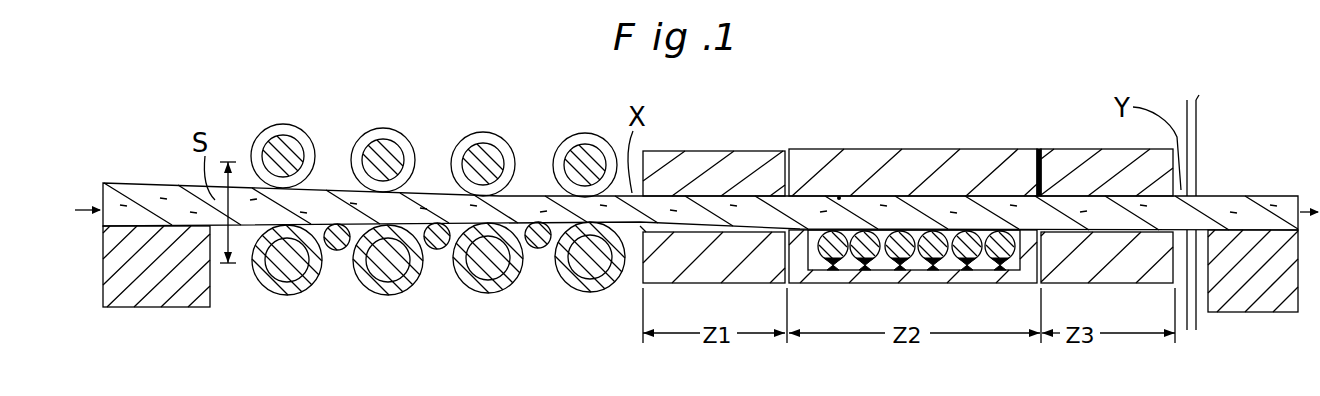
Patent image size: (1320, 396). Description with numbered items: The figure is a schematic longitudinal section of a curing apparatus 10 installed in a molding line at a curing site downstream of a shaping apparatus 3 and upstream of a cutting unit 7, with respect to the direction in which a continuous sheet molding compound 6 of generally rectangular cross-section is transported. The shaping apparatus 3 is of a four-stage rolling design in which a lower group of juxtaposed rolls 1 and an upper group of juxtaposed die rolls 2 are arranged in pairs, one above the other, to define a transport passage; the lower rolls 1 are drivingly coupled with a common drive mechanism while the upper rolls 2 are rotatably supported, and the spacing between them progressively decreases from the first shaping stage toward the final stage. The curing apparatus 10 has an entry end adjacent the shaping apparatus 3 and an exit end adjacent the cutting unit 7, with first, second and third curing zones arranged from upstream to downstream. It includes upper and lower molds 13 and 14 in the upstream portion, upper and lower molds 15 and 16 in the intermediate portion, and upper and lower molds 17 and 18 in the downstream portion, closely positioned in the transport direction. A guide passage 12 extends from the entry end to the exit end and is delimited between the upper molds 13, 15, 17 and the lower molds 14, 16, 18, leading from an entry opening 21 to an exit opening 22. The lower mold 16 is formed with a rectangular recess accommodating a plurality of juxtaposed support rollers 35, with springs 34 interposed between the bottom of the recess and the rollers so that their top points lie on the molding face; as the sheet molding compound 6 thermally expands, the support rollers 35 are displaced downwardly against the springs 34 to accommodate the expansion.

The lower group of juxtaposed rolls 1 is at (587, 292).
The upper group of juxtaposed die rolls 2 is at (370, 131).
The shaping apparatus 3 is at (444, 98).
The continuous sheet molding compound 6 is at (148, 190).
The cutting unit 7 is at (1198, 328).
The curing apparatus 10 is at (908, 223).
The guide passage 12 is at (839, 197).
The upper mold 13 is at (718, 165).
The lower mold 14 is at (762, 262).
The upper mold 15 is at (948, 172).
The lower mold 16 is at (967, 283).
The upper mold 17 is at (1065, 162).
The lower mold 18 is at (1130, 270).
The entry opening 21 is at (640, 226).
The exit opening 22 is at (1187, 333).
The springs 34 is at (877, 278).
The support rollers 35 is at (855, 265).